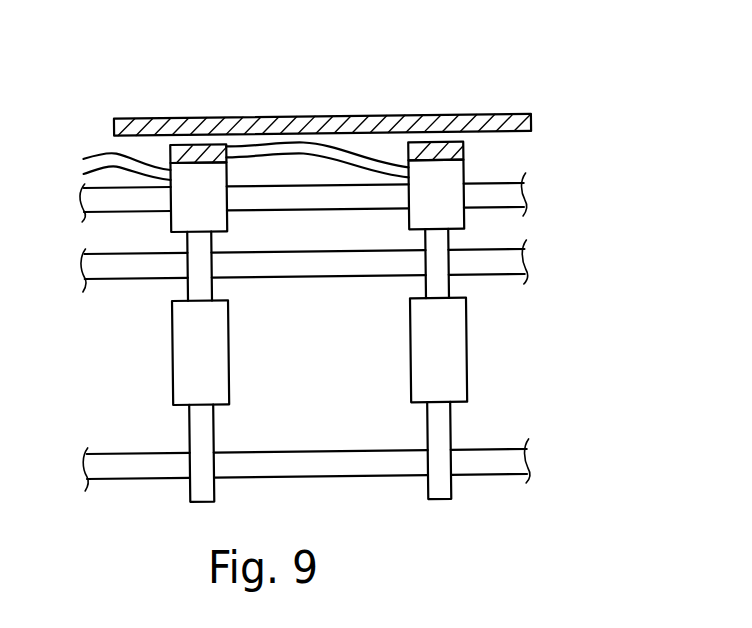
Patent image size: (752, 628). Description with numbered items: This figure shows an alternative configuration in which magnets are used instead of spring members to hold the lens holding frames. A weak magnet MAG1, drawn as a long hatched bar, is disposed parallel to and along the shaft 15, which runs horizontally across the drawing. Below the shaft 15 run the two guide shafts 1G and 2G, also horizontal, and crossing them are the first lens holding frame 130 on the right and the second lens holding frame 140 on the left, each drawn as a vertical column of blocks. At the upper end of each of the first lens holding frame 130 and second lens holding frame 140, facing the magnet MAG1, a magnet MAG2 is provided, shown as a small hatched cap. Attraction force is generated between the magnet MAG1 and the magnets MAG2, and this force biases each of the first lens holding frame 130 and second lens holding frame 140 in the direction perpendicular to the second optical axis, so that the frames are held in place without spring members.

The magnet MAG1 is at (508, 124).
The magnets MAG2 is at (434, 146).
The shaft 15 is at (508, 199).
The guide shaft 1G is at (510, 269).
The guide shaft 2G is at (512, 466).
The first lens holding frame 130 is at (450, 361).
The second lens holding frame 140 is at (213, 368).